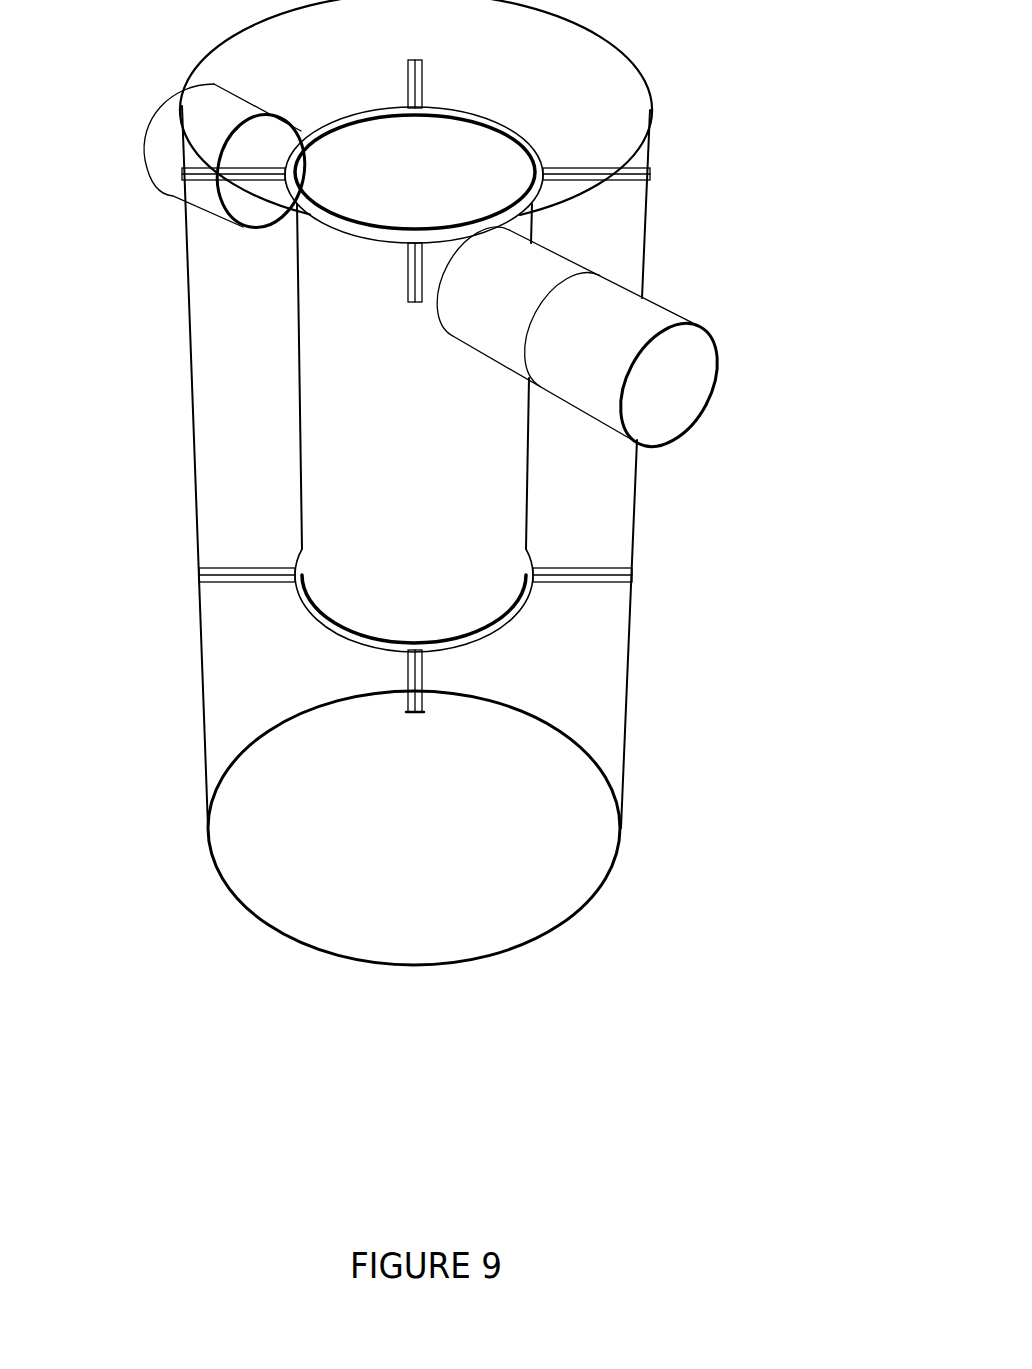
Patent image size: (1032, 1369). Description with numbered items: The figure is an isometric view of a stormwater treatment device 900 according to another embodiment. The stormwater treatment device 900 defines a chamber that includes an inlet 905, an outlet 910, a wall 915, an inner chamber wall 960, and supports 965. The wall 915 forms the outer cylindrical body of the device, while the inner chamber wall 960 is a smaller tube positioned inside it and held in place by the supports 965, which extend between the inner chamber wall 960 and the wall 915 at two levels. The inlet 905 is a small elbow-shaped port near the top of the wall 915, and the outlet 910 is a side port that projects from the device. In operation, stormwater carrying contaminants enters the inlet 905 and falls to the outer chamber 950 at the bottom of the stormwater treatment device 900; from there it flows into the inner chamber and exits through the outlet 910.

The stormwater treatment device 900 is at (472, 582).
The inlet 905 is at (148, 138).
The outlet 910 is at (712, 357).
The wall 915 is at (602, 883).
The outer chamber 950 is at (426, 832).
The inner chamber wall 960 is at (300, 438).
The supports 965 is at (583, 160).